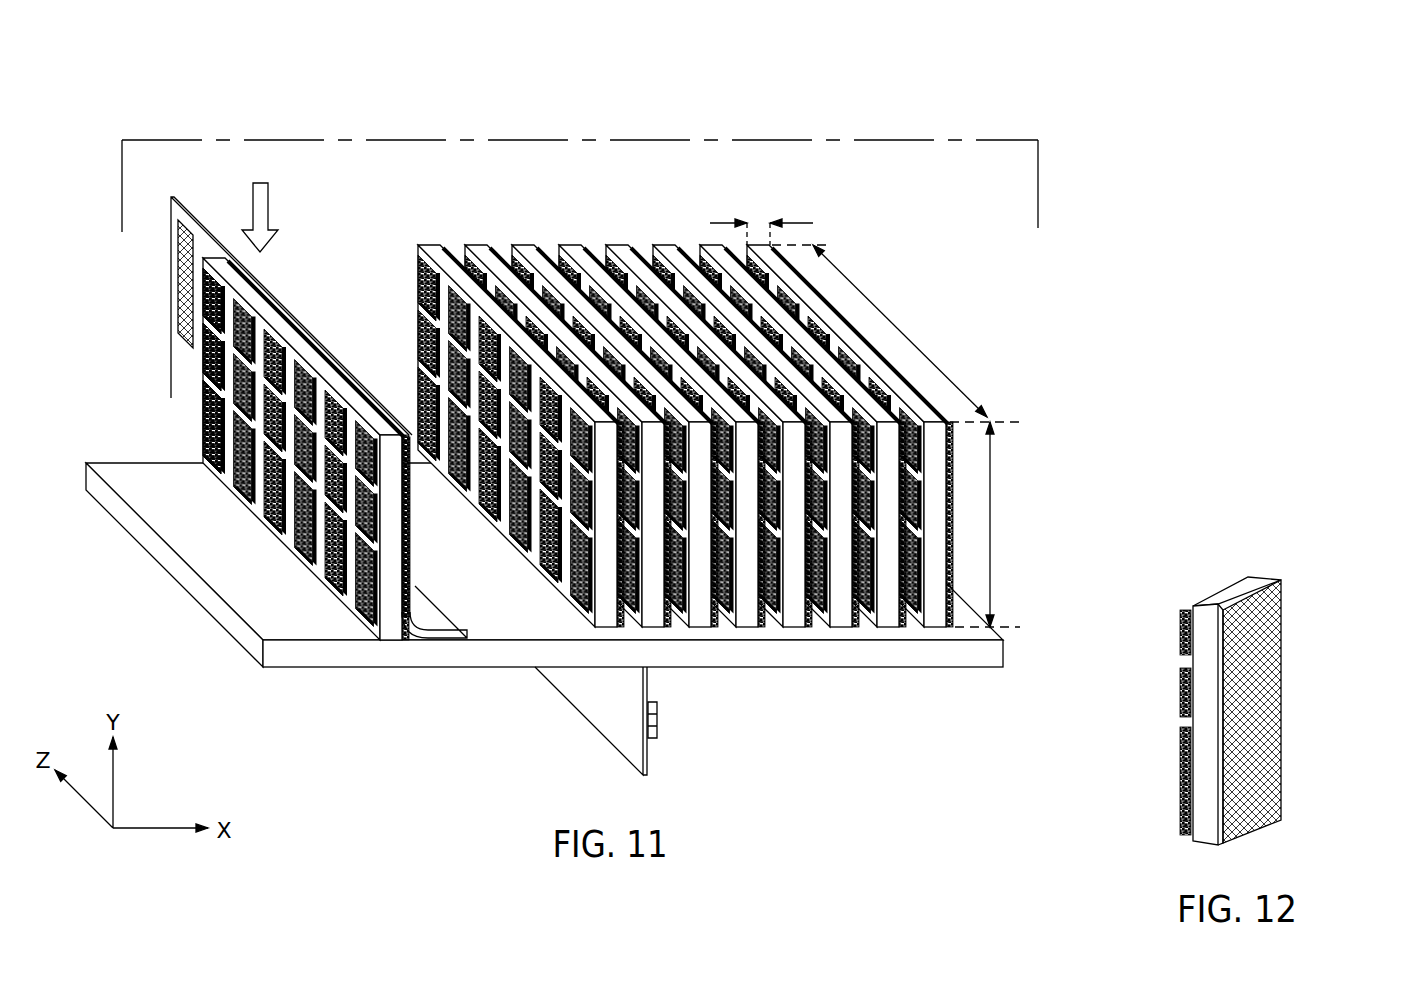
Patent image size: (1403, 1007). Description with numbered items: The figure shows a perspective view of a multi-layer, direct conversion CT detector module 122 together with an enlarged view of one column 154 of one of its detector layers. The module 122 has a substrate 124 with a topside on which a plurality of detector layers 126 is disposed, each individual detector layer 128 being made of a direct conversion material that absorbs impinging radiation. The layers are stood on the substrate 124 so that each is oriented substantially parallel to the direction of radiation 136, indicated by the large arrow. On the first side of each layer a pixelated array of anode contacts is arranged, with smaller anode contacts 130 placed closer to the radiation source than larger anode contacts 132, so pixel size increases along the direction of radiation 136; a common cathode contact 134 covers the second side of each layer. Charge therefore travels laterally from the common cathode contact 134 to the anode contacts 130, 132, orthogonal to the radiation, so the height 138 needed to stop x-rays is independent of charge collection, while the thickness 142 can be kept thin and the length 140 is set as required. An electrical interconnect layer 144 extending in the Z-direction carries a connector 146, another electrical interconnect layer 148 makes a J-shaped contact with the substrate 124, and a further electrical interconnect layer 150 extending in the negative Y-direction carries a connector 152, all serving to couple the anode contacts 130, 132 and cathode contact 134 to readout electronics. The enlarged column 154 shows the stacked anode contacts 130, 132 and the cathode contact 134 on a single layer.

In FIG. 11, the CT detector module 122 is at (1080, 170).
In FIG. 11, the substrate 124 is at (175, 567).
In FIG. 11, the plurality of detector layers 126 is at (345, 140).
In FIG. 11, the individual detector layer 128 is at (390, 632).
In FIG. 11, the smaller anode contacts 130 is at (204, 415).
In FIG. 12, the smaller anode contacts 130 is at (1180, 693).
In FIG. 11, the larger anode contacts 132 is at (275, 533).
In FIG. 12, the larger anode contacts 132 is at (1180, 777).
In FIG. 11, the common cathode contact 134 is at (404, 428).
In FIG. 12, the common cathode contact 134 is at (1281, 712).
In FIG. 11, the direction of radiation 136 is at (270, 210).
In FIG. 11, the height of the detector layer 138 is at (993, 526).
In FIG. 11, the length of the detector layers 140 is at (905, 333).
In FIG. 11, the thickness of the detector layer 142 is at (757, 226).
In FIG. 11, the electrical interconnect layer 144 is at (216, 232).
In FIG. 11, the connector 146 is at (178, 290).
In FIG. 11, the electrical interconnect layer 148 is at (447, 640).
In FIG. 11, the electrical interconnect layer 150 is at (607, 712).
In FIG. 11, the connector 152 is at (658, 722).
In FIG. 11, the column 154 is at (365, 630).
In FIG. 12, the column 154 is at (1270, 527).